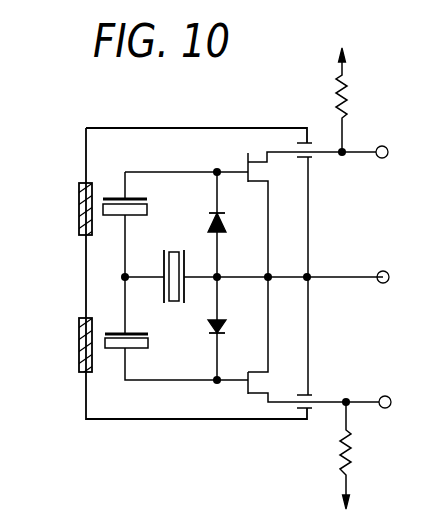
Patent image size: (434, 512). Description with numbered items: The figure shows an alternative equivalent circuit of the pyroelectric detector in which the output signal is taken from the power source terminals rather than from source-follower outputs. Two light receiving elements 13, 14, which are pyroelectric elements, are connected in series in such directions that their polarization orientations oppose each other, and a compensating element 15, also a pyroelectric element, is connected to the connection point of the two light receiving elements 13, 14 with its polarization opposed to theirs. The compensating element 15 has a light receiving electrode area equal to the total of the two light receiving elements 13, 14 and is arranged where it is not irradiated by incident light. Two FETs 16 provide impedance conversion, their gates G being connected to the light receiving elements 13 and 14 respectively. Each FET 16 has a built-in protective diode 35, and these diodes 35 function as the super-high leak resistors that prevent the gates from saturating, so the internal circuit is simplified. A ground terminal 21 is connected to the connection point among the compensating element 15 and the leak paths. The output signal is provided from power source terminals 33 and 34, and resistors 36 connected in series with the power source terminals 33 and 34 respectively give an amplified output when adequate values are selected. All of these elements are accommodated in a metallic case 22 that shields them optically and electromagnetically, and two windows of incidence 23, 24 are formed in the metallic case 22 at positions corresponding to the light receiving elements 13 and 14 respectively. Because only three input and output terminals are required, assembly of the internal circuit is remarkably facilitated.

The light receiving element 13 is at (134, 199).
The light receiving element 14 is at (140, 334).
The compensating element 15 is at (174, 250).
The FET 16 is at (281, 268).
The ground terminal 21 is at (345, 279).
The metallic case 22 is at (178, 421).
The window of incidence 23 is at (79, 206).
The window of incidence 24 is at (79, 344).
The power source terminal 33 is at (363, 151).
The power source terminal 34 is at (365, 404).
The protective diode 35 is at (226, 222).
The resistor 36 is at (352, 99).